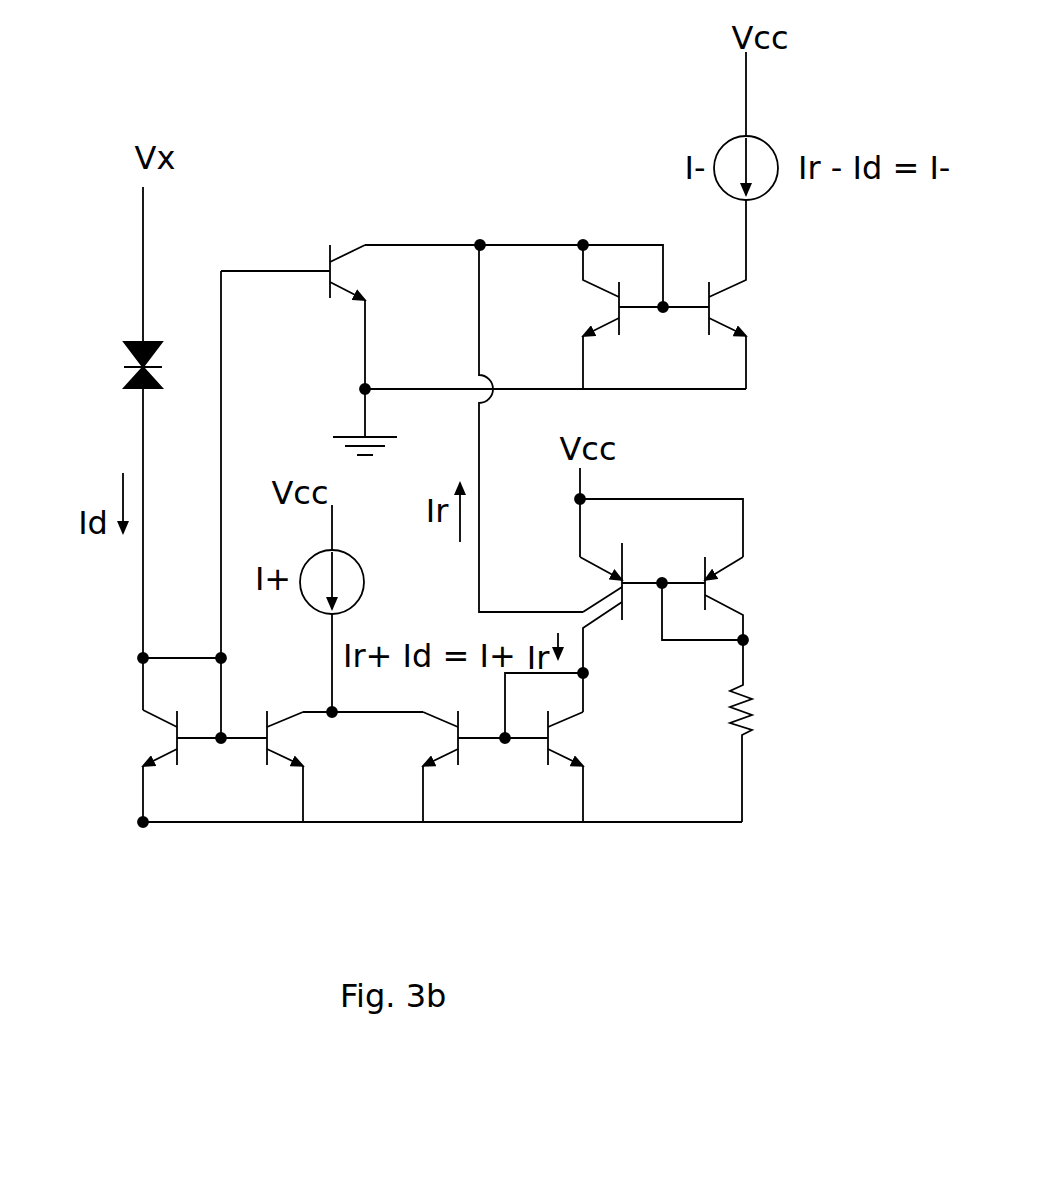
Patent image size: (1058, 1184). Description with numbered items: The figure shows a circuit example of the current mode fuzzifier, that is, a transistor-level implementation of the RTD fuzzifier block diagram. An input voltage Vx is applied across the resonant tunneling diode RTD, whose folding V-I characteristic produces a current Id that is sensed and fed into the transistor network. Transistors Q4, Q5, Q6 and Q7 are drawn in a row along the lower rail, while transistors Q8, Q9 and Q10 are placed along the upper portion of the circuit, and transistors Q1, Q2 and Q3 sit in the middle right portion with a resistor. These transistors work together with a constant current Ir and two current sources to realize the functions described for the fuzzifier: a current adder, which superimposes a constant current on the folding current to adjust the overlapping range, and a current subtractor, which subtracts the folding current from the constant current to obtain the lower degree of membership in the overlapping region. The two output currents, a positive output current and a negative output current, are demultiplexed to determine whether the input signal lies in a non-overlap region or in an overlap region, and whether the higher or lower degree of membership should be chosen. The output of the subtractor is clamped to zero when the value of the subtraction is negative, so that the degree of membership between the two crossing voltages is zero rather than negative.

The resonant tunneling diode RTD is at (102, 365).
The transistor Q1 is at (582, 581).
The transistor Q2 is at (616, 637).
The transistor Q3 is at (742, 598).
The transistor Q4 is at (145, 766).
The transistor Q5 is at (301, 766).
The transistor Q6 is at (425, 766).
The transistor Q7 is at (584, 747).
The transistor Q8 is at (312, 317).
The transistor Q9 is at (583, 317).
The transistor Q10 is at (755, 294).